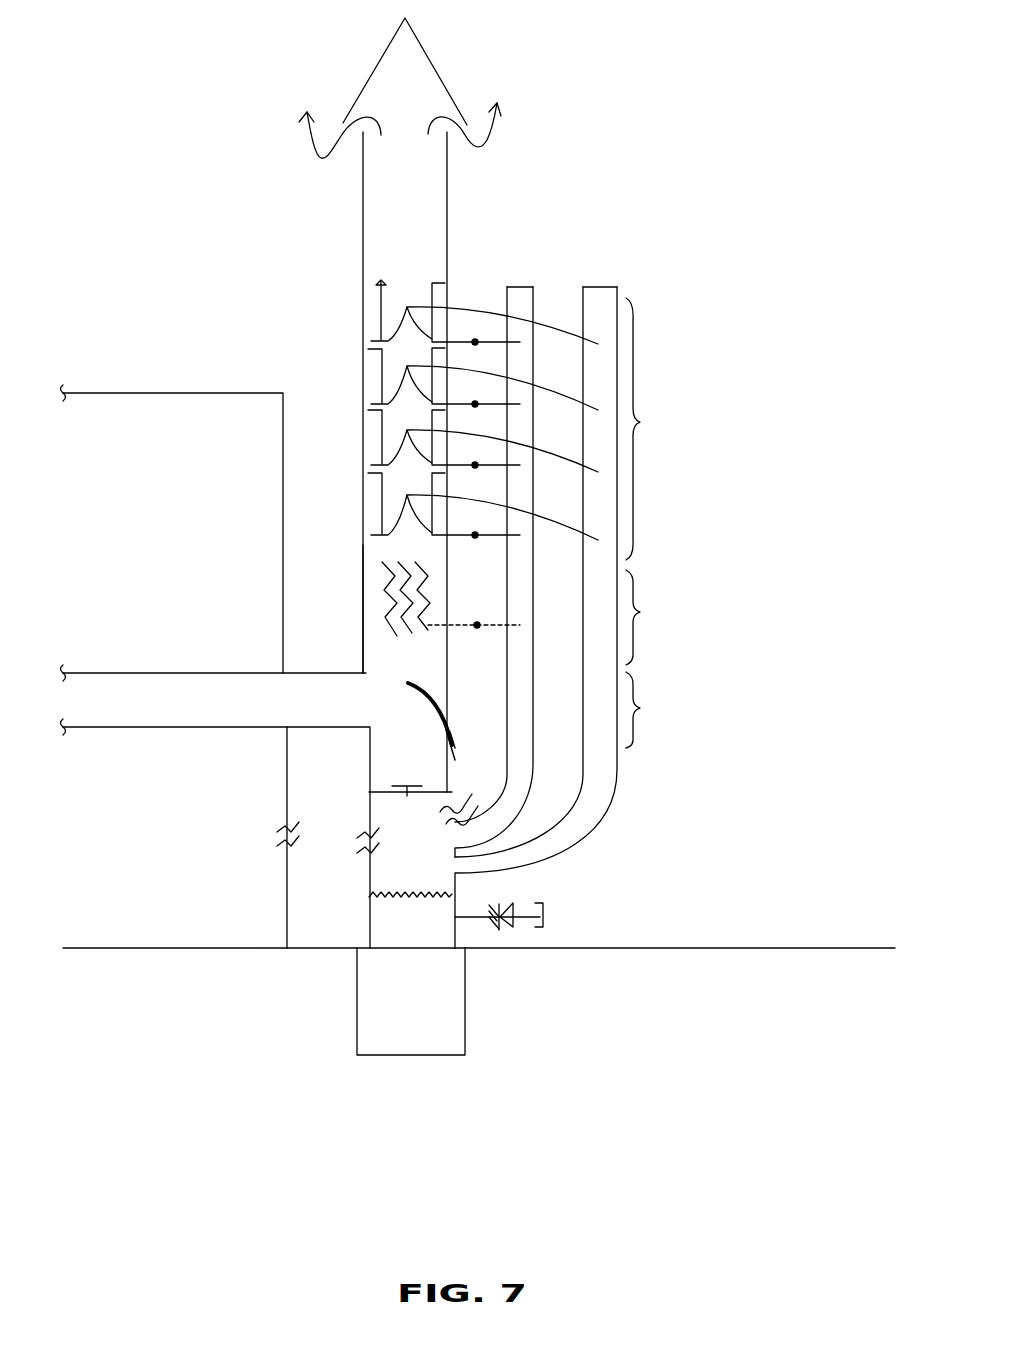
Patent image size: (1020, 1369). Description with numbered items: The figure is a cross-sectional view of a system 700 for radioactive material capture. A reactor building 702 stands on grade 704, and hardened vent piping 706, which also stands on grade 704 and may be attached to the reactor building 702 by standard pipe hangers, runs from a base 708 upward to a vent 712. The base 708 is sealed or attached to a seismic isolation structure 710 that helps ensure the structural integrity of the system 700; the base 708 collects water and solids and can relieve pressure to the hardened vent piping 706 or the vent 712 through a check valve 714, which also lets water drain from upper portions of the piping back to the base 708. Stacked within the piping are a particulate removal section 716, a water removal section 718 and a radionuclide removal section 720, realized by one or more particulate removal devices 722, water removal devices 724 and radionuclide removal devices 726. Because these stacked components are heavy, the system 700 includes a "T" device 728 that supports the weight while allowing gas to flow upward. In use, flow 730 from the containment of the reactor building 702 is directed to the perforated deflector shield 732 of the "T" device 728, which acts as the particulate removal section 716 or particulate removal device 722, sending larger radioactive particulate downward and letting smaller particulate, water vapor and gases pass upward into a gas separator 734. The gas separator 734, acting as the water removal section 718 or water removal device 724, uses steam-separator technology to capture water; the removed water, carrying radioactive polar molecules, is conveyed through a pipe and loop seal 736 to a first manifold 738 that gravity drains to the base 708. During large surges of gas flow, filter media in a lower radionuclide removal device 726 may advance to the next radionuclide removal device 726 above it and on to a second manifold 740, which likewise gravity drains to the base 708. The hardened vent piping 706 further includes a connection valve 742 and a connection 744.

The system 700 is at (788, 263).
The reactor building 702 is at (173, 505).
The grade 704 is at (842, 950).
The hardened vent piping 706 is at (358, 262).
The base 708 is at (369, 918).
The seismic isolation structure 710 is at (372, 1062).
The vent 712 is at (442, 53).
The check valve 714 is at (400, 778).
The particulate removal section 716 is at (661, 710).
The water removal section 718 is at (661, 617).
The radionuclide removal section 720 is at (661, 429).
The particulate removal device 722 is at (455, 715).
The water removal device 724 is at (461, 550).
The radionuclide removal device 726 is at (356, 322).
The "T" device 728 is at (362, 660).
The flow 730 is at (80, 702).
The perforated deflector shield 732 is at (425, 708).
The gas separator 734 is at (364, 581).
The pipe and loop seal 736 is at (478, 635).
The first manifold 738 is at (518, 287).
The second manifold 740 is at (598, 287).
The connection valve 742 is at (520, 899).
The connection 744 is at (550, 917).